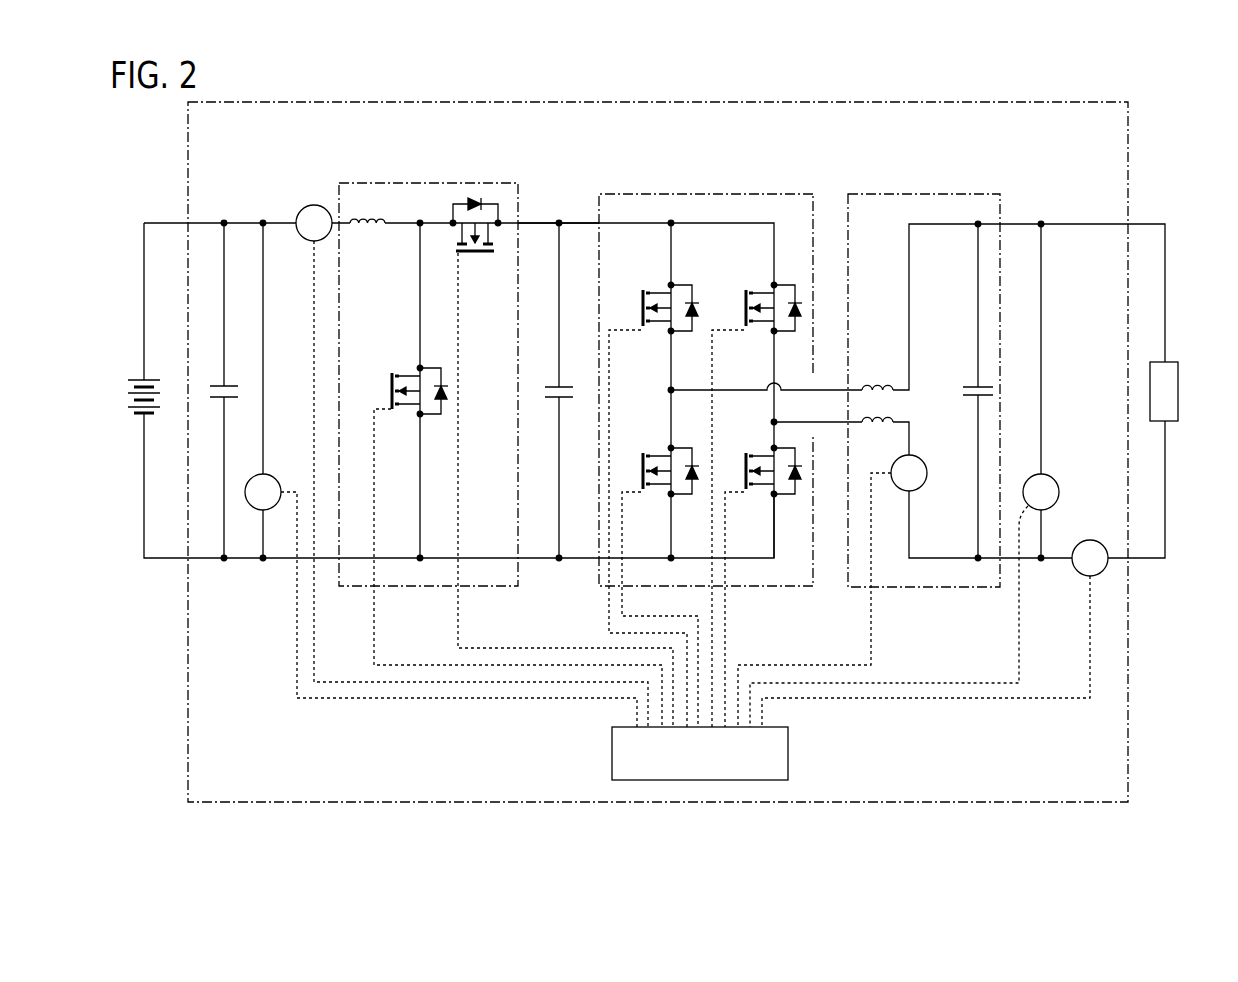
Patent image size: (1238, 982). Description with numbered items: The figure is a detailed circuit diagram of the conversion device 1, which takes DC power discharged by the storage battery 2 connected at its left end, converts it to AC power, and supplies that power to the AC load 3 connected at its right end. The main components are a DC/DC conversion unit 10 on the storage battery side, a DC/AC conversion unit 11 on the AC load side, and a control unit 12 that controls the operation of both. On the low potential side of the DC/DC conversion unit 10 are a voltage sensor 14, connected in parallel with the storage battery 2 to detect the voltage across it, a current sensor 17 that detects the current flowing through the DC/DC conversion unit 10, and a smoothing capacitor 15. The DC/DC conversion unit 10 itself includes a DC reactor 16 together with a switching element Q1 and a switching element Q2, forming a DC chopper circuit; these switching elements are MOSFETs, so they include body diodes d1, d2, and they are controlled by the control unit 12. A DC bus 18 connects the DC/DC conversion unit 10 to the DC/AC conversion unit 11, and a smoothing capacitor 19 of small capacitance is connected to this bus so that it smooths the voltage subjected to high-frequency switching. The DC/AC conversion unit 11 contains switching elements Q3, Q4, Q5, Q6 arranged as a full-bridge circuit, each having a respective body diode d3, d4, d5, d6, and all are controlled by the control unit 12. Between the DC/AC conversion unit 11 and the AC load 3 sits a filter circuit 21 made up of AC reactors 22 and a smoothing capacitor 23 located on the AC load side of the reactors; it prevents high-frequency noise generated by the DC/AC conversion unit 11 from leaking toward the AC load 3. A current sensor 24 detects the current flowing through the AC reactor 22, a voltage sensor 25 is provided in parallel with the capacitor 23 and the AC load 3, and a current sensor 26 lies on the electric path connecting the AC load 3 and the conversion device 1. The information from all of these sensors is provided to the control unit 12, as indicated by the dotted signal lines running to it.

The conversion device 1 is at (1128, 147).
The storage battery 2 is at (141, 378).
The AC load 3 is at (1178, 378).
The DC/DC conversion unit 10 is at (506, 417).
The DC/AC conversion unit 11 is at (706, 422).
The control unit 12 is at (790, 752).
The voltage sensor 14 is at (273, 474).
The smoothing capacitor 15 is at (221, 385).
The DC reactor 16 is at (368, 232).
The current sensor 17 is at (314, 205).
The DC bus 18 is at (579, 221).
The smoothing capacitor 19 is at (556, 386).
The filter circuit 21 is at (951, 460).
The AC reactor 22 is at (877, 389).
The smoothing capacitor 23 is at (975, 387).
The current sensor 24 is at (927, 462).
The voltage sensor 25 is at (1055, 480).
The current sensor 26 is at (1090, 540).
The switching element Q1 is at (561, 473).
The switching element Q2 is at (512, 475).
The switching element Q3 is at (654, 504).
The switching element Q4 is at (757, 504).
The switching element Q5 is at (656, 586).
The switching element Q6 is at (759, 586).
The diode d1 is at (440, 176).
The diode d2 is at (442, 431).
The diode d3 is at (692, 349).
The diode d4 is at (795, 349).
The diode d5 is at (692, 511).
The diode d6 is at (795, 511).